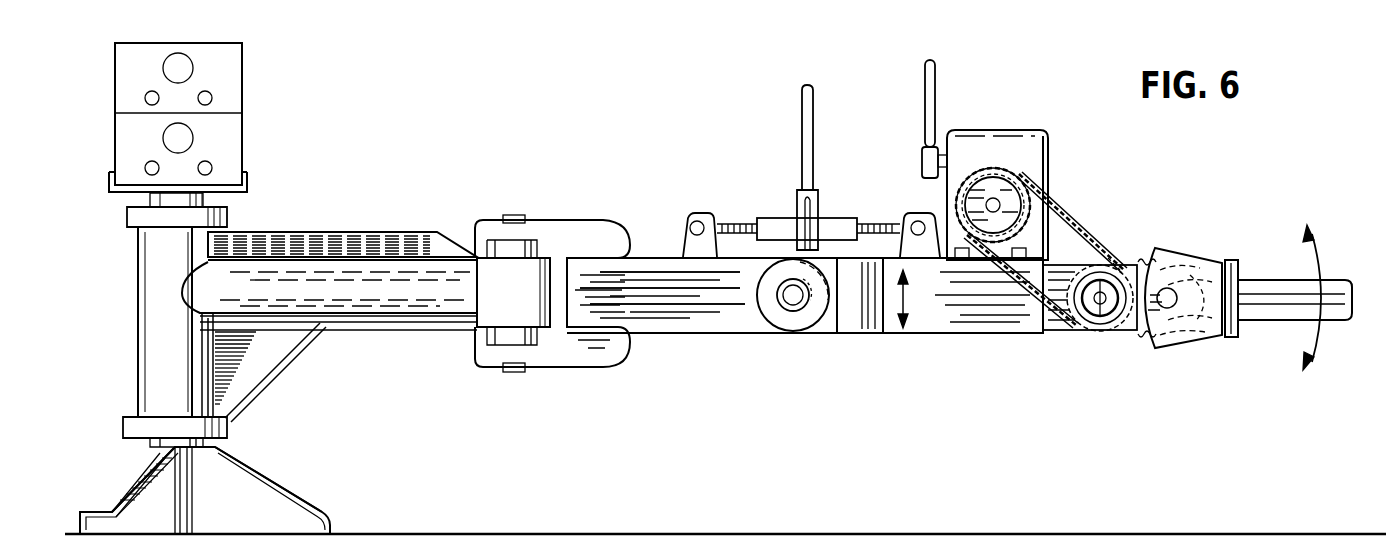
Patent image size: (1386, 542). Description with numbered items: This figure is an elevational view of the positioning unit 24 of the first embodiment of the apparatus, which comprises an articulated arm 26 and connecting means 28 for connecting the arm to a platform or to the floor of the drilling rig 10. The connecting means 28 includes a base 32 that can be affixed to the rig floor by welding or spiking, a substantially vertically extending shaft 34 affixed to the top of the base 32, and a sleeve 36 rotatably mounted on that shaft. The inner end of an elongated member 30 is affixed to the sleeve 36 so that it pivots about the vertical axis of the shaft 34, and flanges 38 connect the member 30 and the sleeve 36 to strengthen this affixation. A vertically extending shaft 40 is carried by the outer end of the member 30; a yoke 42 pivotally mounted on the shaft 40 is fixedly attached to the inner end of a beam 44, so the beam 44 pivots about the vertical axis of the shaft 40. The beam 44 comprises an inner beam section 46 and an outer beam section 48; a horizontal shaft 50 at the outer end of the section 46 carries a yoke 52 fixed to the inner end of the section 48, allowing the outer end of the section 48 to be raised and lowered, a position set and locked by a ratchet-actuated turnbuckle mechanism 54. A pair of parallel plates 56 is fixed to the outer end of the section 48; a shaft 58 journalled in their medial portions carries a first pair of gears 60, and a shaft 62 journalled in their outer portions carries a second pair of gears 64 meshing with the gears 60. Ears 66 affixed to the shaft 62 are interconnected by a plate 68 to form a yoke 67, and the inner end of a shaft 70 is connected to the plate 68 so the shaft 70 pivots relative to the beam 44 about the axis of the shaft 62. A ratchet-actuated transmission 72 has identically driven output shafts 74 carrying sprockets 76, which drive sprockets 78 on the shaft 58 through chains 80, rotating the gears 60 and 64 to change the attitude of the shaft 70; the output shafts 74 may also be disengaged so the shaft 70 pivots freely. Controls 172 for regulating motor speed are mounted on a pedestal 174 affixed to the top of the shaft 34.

The drilling rig 10 is at (646, 534).
The positioning unit 24 is at (727, 180).
The articulated arm 26 is at (1003, 342).
The connecting means 28 is at (276, 471).
The elongated member 30 is at (392, 313).
The base 32 is at (118, 475).
The shaft 34 is at (140, 441).
The sleeve 36 is at (142, 325).
The flanges 38 is at (352, 232).
The shaft 40 is at (513, 215).
The yoke 42 is at (582, 232).
The beam 44 is at (699, 333).
The inner beam section 46 is at (648, 318).
The outer beam section 48 is at (960, 320).
The shaft 50 is at (793, 300).
The yoke 52 is at (853, 315).
The ratchet-actuated turnbuckle mechanism 54 is at (801, 123).
The parallel plates 56 is at (1056, 330).
The shaft 58 is at (1100, 305).
The first pair of gears 60 is at (1104, 255).
The shaft 62 is at (1168, 302).
The second pair of gears 64 is at (1143, 338).
The ears 66 is at (1162, 264).
The yoke 67 is at (1184, 245).
The plate 68 is at (1232, 260).
The shaft 70 is at (1333, 292).
The ratchet-actuated transmission 72 is at (998, 132).
The output shafts 74 is at (993, 198).
The sprockets 76 is at (1015, 198).
The sprockets 78 is at (1088, 272).
The chains 80 is at (1073, 236).
The controls 172 is at (246, 87).
The pedestal 174 is at (247, 183).